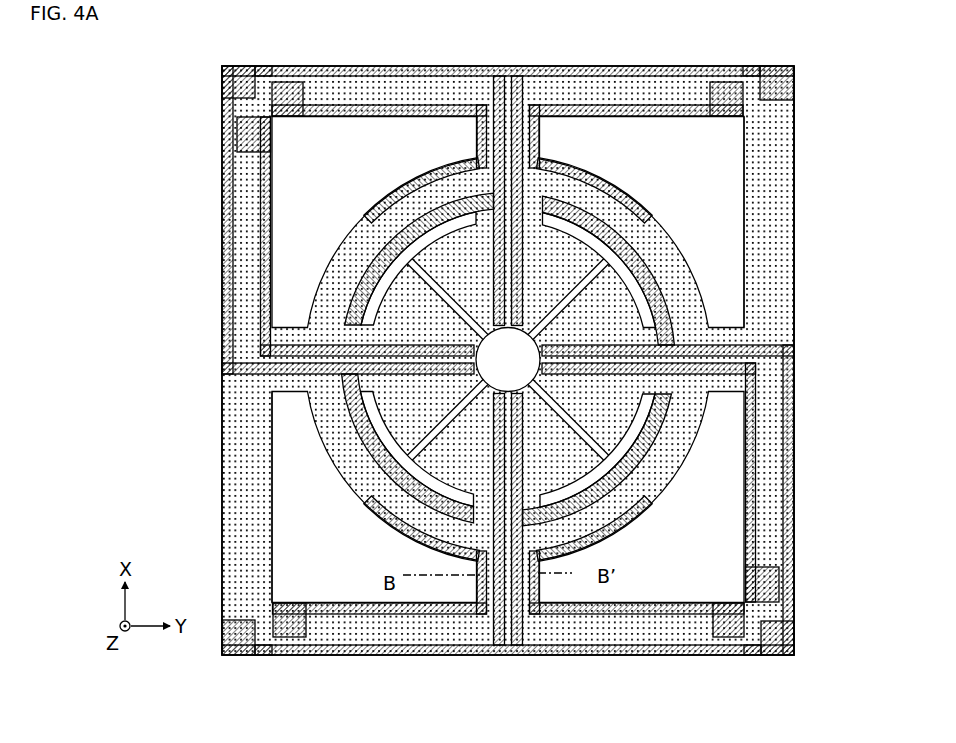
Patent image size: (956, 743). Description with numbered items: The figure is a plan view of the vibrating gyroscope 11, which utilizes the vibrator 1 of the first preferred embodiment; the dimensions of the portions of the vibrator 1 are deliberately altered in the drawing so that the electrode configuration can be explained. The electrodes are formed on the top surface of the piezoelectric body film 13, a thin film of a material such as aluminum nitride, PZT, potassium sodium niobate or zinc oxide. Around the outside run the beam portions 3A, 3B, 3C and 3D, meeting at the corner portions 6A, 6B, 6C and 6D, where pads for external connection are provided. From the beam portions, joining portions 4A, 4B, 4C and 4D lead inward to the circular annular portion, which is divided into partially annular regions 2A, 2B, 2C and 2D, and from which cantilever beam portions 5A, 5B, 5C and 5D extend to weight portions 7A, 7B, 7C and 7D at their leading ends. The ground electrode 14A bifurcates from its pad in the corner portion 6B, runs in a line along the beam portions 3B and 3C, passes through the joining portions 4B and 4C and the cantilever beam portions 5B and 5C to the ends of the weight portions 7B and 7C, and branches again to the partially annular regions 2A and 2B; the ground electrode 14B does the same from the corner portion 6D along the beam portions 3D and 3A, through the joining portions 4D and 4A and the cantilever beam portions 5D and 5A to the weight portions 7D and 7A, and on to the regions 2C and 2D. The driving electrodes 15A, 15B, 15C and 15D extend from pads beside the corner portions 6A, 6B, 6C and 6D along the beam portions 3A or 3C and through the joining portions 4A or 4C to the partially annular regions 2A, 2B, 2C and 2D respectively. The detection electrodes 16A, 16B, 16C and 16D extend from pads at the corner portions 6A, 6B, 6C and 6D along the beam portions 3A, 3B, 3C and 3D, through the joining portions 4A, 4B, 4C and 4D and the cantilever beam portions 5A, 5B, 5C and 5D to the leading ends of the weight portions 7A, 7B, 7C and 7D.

The vibrator 1 is at (800, 173).
The vibrating gyroscope 11 is at (810, 55).
The piezoelectric body film 13 is at (792, 303).
The partially annular region 2A is at (658, 248).
The partially annular region 2B is at (652, 503).
The partially annular region 2C is at (358, 474).
The partially annular region 2D is at (368, 218).
The beam portion 3A is at (648, 66).
The beam portion 3B is at (790, 245).
The beam portion 3C is at (492, 656).
The beam portion 3D is at (233, 403).
The joining portion 4A is at (541, 140).
The joining portion 4B is at (722, 395).
The joining portion 4C is at (478, 592).
The joining portion 4D is at (298, 325).
The cantilever beam portion 5A is at (568, 245).
The cantilever beam portion 5B is at (655, 405).
The cantilever beam portion 5C is at (446, 536).
The cantilever beam portion 5D is at (362, 295).
The corner portion 6A is at (767, 66).
The corner portion 6B is at (758, 656).
The corner portion 6C is at (263, 656).
The corner portion 6D is at (258, 66).
The weight portion 7A is at (575, 213).
The weight portion 7B is at (625, 428).
The weight portion 7C is at (390, 530).
The weight portion 7D is at (378, 268).
The ground electrode 14A is at (790, 635).
The ground electrode 14B is at (240, 92).
The driving electrode 15A is at (723, 87).
The driving electrode 15B is at (715, 640).
The driving electrode 15C is at (297, 637).
The driving electrode 15D is at (302, 82).
The detection electrode 16A is at (778, 93).
The detection electrode 16B is at (772, 583).
The detection electrode 16C is at (218, 655).
The detection electrode 16D is at (222, 160).